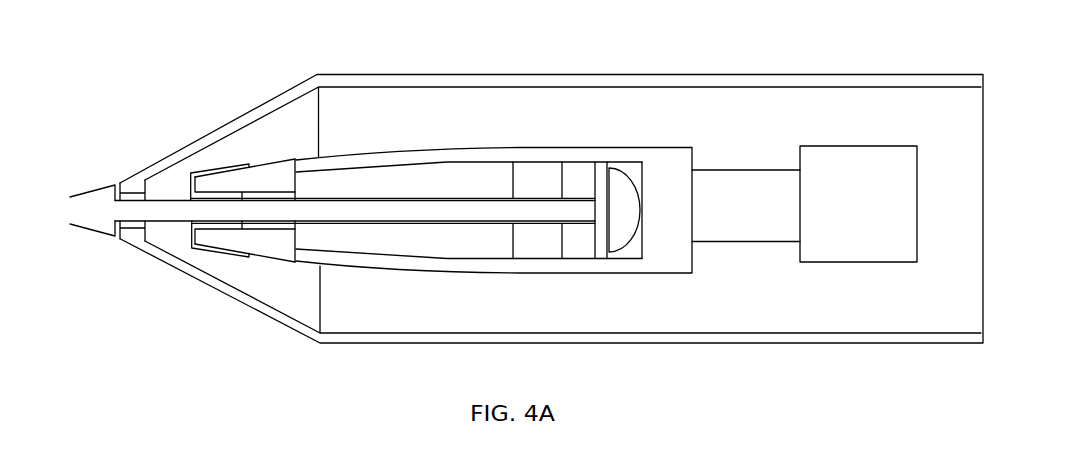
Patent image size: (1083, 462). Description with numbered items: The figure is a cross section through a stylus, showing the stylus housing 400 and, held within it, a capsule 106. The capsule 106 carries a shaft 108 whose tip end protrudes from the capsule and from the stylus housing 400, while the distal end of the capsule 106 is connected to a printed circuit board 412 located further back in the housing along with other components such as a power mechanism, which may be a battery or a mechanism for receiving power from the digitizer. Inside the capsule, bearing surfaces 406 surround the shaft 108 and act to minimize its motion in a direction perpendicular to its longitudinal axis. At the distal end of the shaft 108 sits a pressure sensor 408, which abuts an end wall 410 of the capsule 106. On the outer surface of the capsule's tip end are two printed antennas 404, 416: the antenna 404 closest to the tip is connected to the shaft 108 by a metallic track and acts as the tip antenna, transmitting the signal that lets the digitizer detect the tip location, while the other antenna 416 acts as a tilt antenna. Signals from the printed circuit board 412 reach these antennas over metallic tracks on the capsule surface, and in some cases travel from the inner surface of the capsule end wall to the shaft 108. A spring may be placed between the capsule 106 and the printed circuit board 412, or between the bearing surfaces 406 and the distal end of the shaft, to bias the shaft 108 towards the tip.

The stylus housing 400 is at (712, 79).
The printed antenna 404 is at (220, 170).
The printed antenna 416 is at (282, 161).
The capsule 106 is at (403, 158).
The shaft 108 is at (417, 220).
The bearing surfaces 406 is at (552, 191).
The pressure sensor 408 is at (625, 213).
The end wall 410 is at (683, 203).
The printed circuit board 412 is at (873, 217).